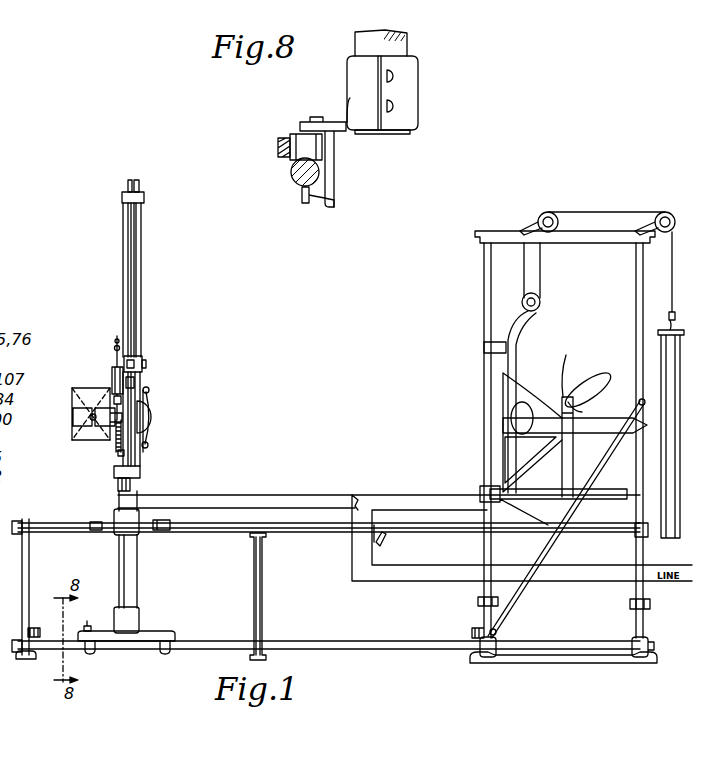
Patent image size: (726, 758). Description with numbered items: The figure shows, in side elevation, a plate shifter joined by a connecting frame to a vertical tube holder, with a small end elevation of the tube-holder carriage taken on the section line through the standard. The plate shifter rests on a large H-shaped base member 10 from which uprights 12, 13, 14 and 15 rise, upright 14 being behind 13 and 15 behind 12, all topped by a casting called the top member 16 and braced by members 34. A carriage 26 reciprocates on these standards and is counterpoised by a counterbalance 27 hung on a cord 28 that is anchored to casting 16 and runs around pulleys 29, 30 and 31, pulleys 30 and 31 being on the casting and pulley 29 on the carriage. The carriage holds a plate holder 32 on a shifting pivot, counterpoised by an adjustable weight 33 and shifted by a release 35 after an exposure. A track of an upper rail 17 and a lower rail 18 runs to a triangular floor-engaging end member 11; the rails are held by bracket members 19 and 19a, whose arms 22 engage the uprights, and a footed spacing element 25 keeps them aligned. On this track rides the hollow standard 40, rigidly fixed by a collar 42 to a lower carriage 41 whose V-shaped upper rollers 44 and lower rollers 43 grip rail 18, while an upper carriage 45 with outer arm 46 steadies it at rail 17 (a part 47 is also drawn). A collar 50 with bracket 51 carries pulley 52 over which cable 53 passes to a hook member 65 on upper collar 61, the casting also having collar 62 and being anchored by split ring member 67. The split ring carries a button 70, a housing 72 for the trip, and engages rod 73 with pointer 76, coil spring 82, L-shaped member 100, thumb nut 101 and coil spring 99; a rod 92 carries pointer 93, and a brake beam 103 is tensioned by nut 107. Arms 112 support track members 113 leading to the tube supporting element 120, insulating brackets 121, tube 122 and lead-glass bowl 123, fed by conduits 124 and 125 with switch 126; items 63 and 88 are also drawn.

In FIG. 1, the base member 10 is at (563, 657).
In FIG. 1, the end member 11 is at (30, 574).
In FIG. 1, the upright 12 is at (645, 624).
In FIG. 1, the upright 13 is at (482, 613).
In FIG. 1, the upright 14 is at (478, 536).
In FIG. 1, the upright 15 is at (645, 552).
In FIG. 1, the top member 16 is at (327, 641).
In FIG. 1, the upper rail 17 is at (305, 533).
In FIG. 8, the lower rail 18 is at (290, 177).
In FIG. 1, the bracket member 19 is at (635, 595).
In FIG. 1, the bracket member 19a is at (490, 598).
In FIG. 1, the arm 22 is at (478, 601).
In FIG. 1, the spacing element 25 is at (262, 594).
In FIG. 1, the carriage 26 is at (542, 418).
In FIG. 1, the counterbalance 27 is at (681, 389).
In FIG. 1, the cord 28 is at (673, 286).
In FIG. 1, the pulley 29 is at (541, 303).
In FIG. 1, the pulley 30 is at (549, 213).
In FIG. 1, the pulley 31 is at (663, 214).
In FIG. 1, the plate holder 32 is at (532, 432).
In FIG. 1, the adjustable weight 33 is at (591, 383).
In FIG. 1, the brace member 34 is at (549, 550).
In FIG. 1, the release 35 is at (570, 371).
In FIG. 8, the standard 40 is at (411, 47).
In FIG. 1, the standard 40 is at (136, 573).
In FIG. 8, the lower carriage 41 is at (340, 122).
In FIG. 1, the lower carriage 41 is at (150, 632).
In FIG. 8, the collar 42 is at (392, 89).
In FIG. 1, the collar 42 is at (138, 614).
In FIG. 8, the lower rollers 43 is at (308, 205).
In FIG. 1, the lower rollers 43 is at (160, 649).
In FIG. 8, the upper rollers 44 is at (300, 138).
In FIG. 1, the upper rollers 44 is at (87, 621).
In FIG. 1, the upper carriage 45 is at (125, 525).
In FIG. 1, the outer arm 46 is at (158, 521).
In FIG. 1, the rail bracket 47 is at (162, 531).
In FIG. 1, the collar 50 is at (122, 199).
In FIG. 1, the bracket 51 is at (130, 181).
In FIG. 1, the pulley 52 is at (137, 181).
In FIG. 1, the cable 53 is at (137, 222).
In FIG. 1, the upper collar 61 is at (142, 366).
In FIG. 1, the collar 62 is at (141, 471).
In FIG. 1, the lug 63 is at (146, 364).
In FIG. 1, the hook member 65 is at (140, 358).
In FIG. 1, the split ring member 67 is at (152, 419).
In FIG. 1, the button 70 is at (73, 420).
In FIG. 1, the housing 72 is at (114, 408).
In FIG. 1, the rod member 73 is at (117, 439).
In FIG. 1, the pointer 76 is at (112, 371).
In FIG. 1, the coil spring 82 is at (125, 454).
In FIG. 1, the coupling 88 is at (117, 460).
In FIG. 1, the rod 92 is at (114, 349).
In FIG. 1, the pointer 93 is at (115, 341).
In FIG. 1, the coil spring 99 is at (131, 485).
In FIG. 1, the L-shaped member 100 is at (121, 491).
In FIG. 1, the thumb nut 101 is at (120, 479).
In FIG. 1, the brake beam 103 is at (146, 434).
In FIG. 1, the nut 107 is at (135, 383).
In FIG. 1, the arms 112 is at (150, 399).
In FIG. 1, the track members 113 is at (149, 389).
In FIG. 1, the tube supporting element 120 is at (112, 428).
In FIG. 1, the brackets 121 is at (90, 432).
In FIG. 1, the tube 122 is at (72, 400).
In FIG. 1, the bowl of lead glass 123 is at (77, 391).
In FIG. 1, the conduit 124 is at (415, 558).
In FIG. 1, the conduit 125 is at (390, 581).
In FIG. 1, the switch 126 is at (372, 548).